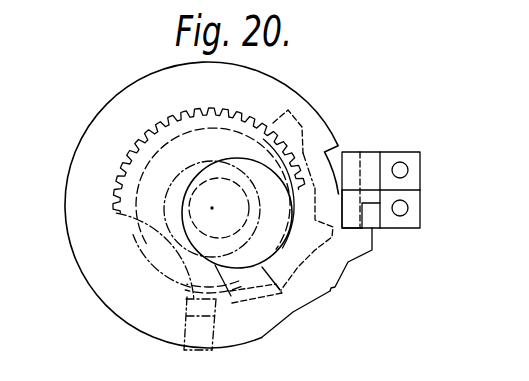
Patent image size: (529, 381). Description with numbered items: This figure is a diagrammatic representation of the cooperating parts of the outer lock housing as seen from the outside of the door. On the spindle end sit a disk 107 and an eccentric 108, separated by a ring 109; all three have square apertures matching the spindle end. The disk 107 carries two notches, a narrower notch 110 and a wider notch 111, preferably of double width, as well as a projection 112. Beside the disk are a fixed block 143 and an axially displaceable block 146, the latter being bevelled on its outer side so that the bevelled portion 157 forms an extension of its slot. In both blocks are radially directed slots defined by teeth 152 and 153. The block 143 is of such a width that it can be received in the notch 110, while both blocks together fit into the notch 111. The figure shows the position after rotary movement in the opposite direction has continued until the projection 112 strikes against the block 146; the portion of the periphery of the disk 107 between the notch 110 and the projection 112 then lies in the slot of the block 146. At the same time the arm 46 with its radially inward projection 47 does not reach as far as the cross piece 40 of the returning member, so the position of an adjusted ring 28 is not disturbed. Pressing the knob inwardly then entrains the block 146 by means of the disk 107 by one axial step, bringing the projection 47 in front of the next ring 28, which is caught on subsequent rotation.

The ring 28 is at (133, 142).
The cross piece 40 is at (250, 302).
The angularly shaped arm 46 is at (190, 337).
The projection 47 is at (215, 323).
The disk 107 is at (303, 107).
The eccentric 108 is at (225, 224).
The ring 109 is at (183, 207).
The notch 110 is at (325, 152).
The notch 111 is at (293, 312).
The projection 112 is at (357, 253).
The block 143 is at (412, 173).
The block 146 is at (412, 209).
The tooth 152 is at (350, 163).
The tooth 153 is at (350, 217).
The bevelled portion 157 is at (372, 213).